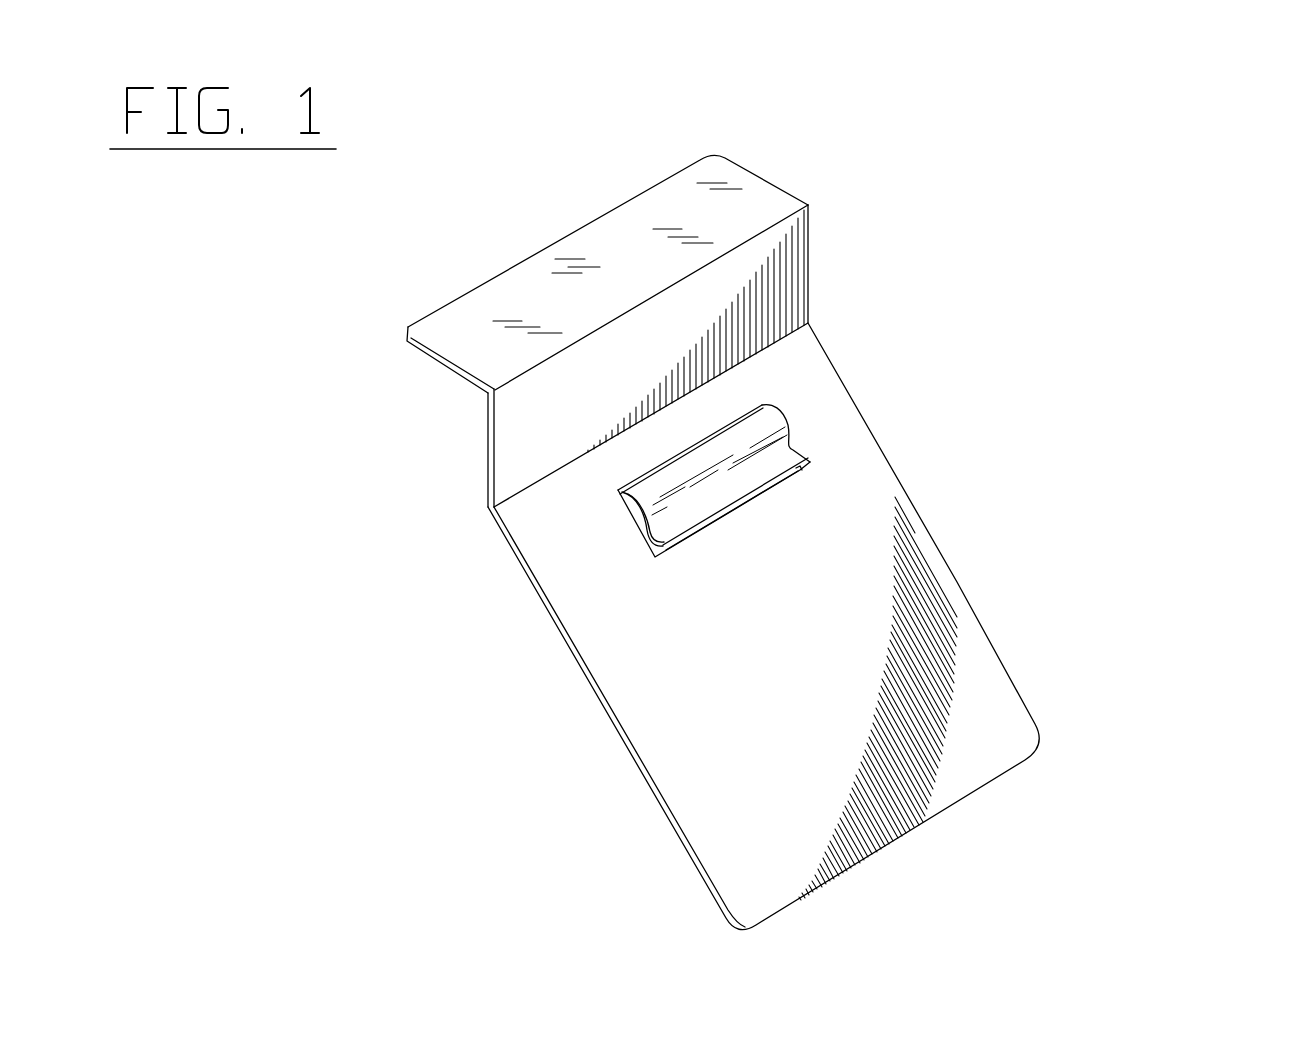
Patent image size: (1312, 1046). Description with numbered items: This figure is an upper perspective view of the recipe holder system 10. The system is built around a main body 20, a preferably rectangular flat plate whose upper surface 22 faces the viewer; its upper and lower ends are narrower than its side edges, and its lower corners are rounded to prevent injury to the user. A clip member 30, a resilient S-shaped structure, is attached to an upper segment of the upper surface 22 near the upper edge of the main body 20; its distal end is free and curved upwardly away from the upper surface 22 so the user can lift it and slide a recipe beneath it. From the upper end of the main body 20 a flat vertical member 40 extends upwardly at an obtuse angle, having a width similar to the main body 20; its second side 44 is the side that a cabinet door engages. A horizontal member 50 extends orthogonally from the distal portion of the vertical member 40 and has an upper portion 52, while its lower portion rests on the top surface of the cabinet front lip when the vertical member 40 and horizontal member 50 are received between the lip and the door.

The recipe holder system 10 is at (1117, 175).
The main body 20 is at (960, 580).
The upper surface 22 is at (978, 718).
The clip member 30 is at (788, 450).
The vertical member 40 is at (788, 262).
The second side 44 is at (777, 305).
The horizontal member 50 is at (765, 198).
The upper portion 52 is at (462, 347).